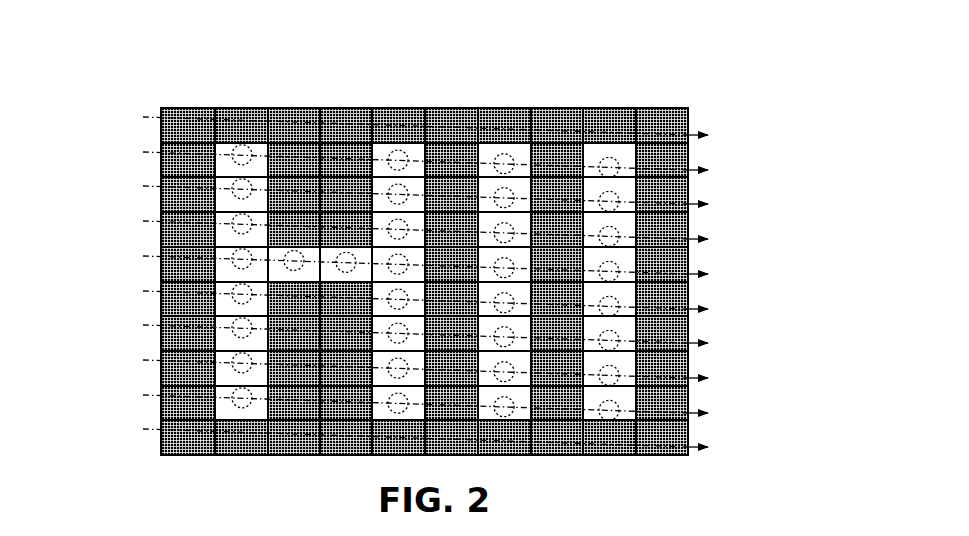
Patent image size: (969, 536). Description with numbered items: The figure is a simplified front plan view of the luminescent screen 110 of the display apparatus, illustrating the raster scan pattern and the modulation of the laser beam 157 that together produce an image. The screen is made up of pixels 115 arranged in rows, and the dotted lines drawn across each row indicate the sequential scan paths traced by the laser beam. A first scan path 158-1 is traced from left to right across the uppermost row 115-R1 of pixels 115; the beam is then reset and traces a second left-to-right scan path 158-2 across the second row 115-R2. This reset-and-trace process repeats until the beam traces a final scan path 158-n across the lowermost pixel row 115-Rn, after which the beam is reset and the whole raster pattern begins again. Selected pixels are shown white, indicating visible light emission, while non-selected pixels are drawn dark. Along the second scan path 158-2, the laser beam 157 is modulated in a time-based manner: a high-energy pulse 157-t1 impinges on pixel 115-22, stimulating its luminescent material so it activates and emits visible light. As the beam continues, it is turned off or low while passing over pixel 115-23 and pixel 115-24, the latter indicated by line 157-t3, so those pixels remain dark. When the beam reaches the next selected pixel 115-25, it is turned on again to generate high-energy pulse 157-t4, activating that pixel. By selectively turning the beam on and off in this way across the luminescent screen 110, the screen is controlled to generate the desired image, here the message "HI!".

The luminescent screen 110 is at (140, 62).
The pixel 115-22 is at (223, 150).
The pixel 115-23 is at (303, 147).
The pixel 115-24 is at (352, 158).
The pixel 115-25 is at (418, 148).
The pixels 115 is at (562, 152).
The uppermost row of pixels 115-R1 is at (152, 127).
The second row of pixels 115-R2 is at (152, 160).
The lowermost pixel row 115-Rn is at (152, 440).
The laser beam 157 is at (157, 187).
The high-energy pulse 157-t1 is at (242, 150).
The line indicating laser beam off 157-t3 is at (364, 142).
The high-energy pulse 157-t4 is at (402, 160).
The first scan path 158-1 is at (522, 132).
The second scan path 158-2 is at (665, 168).
The scan path 158-n is at (657, 447).